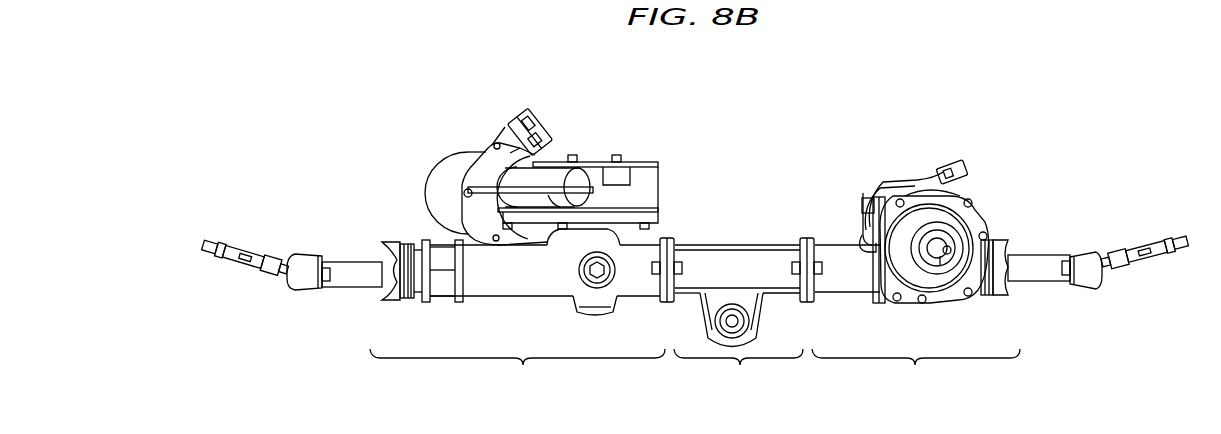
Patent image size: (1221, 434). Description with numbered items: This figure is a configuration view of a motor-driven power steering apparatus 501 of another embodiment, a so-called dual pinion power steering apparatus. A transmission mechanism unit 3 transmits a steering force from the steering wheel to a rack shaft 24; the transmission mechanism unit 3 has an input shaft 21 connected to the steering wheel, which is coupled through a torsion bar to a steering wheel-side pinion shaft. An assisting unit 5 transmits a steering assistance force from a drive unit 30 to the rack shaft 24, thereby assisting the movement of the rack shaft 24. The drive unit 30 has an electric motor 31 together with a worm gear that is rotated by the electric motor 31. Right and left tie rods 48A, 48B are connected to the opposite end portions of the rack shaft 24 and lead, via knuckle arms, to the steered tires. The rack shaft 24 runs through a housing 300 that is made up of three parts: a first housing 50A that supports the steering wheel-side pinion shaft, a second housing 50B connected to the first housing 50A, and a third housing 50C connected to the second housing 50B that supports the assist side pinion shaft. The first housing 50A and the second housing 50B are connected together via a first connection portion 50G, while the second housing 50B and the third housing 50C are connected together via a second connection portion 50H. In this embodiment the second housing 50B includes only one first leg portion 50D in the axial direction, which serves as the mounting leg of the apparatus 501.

The motor-driven power steering apparatus 501 is at (409, 121).
The drive unit 30 is at (461, 165).
The electric motor 31 is at (441, 172).
The assisting unit 5 is at (663, 152).
The housing 300 is at (790, 164).
The second connection portion 50H is at (670, 236).
The first connection portion 50G is at (810, 236).
The transmission mechanism unit 3 is at (958, 226).
The input shaft 21 is at (955, 242).
The tie rod 48A is at (267, 252).
The tie rod 48B is at (1152, 241).
The rack shaft 24 is at (341, 260).
The first leg portion 50D is at (706, 336).
The third housing 50C is at (517, 372).
The second housing 50B is at (738, 372).
The first housing 50A is at (916, 372).